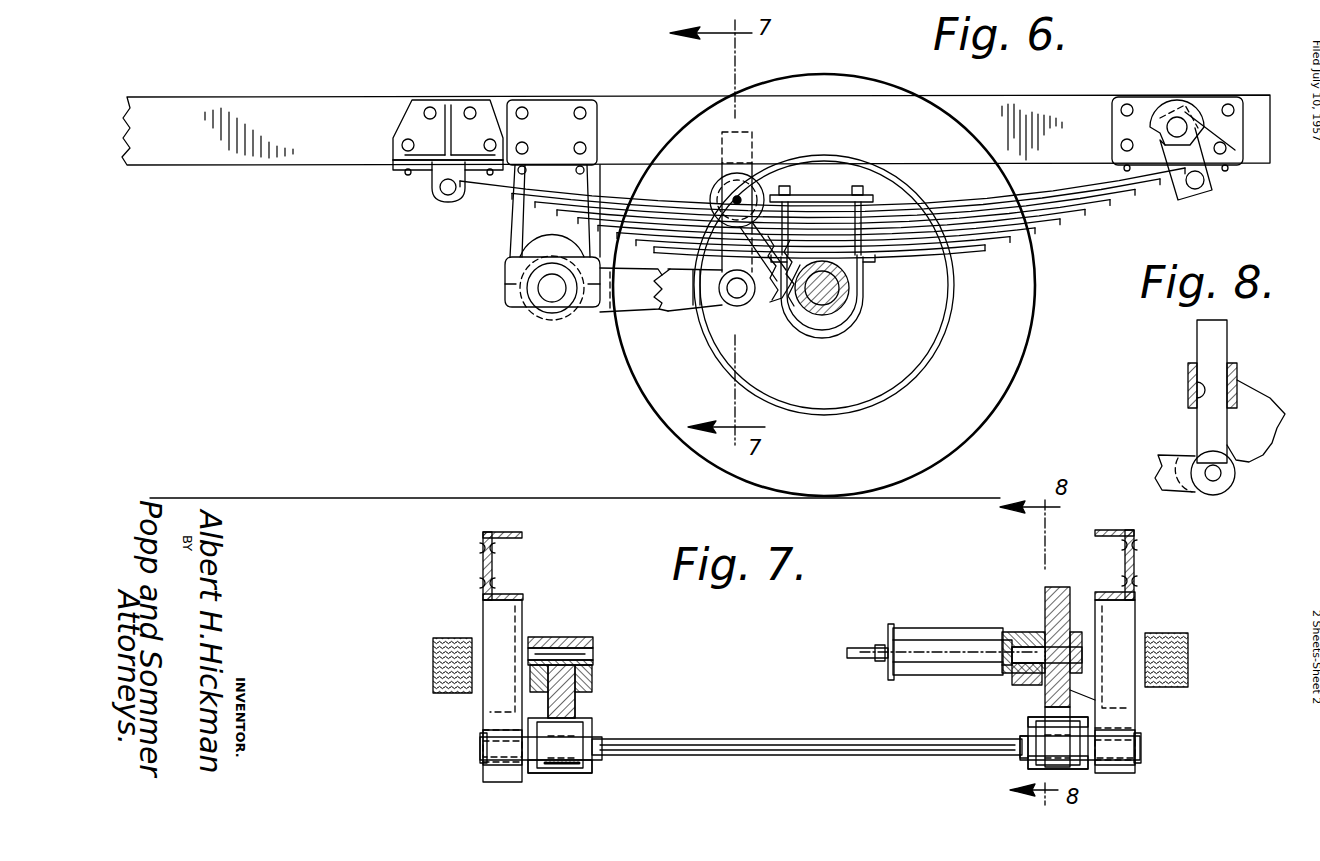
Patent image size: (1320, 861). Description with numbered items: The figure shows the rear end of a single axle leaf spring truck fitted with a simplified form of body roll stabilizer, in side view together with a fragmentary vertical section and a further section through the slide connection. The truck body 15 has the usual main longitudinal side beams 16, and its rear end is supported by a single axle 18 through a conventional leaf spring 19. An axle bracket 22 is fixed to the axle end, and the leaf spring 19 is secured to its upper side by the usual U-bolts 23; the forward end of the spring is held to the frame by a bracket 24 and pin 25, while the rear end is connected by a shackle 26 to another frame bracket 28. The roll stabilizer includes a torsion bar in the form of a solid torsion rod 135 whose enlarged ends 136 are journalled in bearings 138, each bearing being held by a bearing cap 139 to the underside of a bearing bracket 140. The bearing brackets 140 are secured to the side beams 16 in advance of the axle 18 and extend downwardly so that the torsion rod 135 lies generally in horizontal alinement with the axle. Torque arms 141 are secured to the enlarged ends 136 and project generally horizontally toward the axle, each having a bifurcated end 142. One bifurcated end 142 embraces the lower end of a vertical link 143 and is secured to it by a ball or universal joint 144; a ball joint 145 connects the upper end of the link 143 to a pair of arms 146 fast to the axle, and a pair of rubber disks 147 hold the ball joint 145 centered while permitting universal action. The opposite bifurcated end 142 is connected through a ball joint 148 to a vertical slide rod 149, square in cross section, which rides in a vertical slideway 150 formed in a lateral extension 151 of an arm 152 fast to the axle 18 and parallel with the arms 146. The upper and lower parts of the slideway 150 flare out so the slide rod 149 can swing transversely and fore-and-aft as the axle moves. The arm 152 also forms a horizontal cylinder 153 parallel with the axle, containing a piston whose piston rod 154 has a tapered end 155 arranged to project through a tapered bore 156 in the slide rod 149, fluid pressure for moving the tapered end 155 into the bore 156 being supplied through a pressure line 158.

In FIG. 6, the truck body 15 is at (1057, 100).
In FIG. 6, the main longitudinal side beams 16 is at (953, 110).
In FIG. 7, the main longitudinal side beams 16 is at (512, 535).
In FIG. 6, the axle 18 is at (850, 290).
In FIG. 6, the leaf spring 19 is at (1068, 204).
In FIG. 7, the leaf spring 19 is at (430, 650).
In FIG. 6, the axle bracket 22 is at (860, 264).
In FIG. 6, the U-bolts 23 is at (830, 182).
In FIG. 6, the bracket 24 is at (410, 120).
In FIG. 6, the pin 25 is at (445, 198).
In FIG. 6, the shackle 26 is at (1208, 200).
In FIG. 6, the frame bracket 28 is at (1142, 108).
In FIG. 7, the torsion rod 135 is at (775, 741).
In FIG. 6, the enlarged ends 136 is at (540, 304).
In FIG. 7, the enlarged ends 136 is at (482, 748).
In FIG. 6, the bearings 138 is at (550, 302).
In FIG. 7, the bearings 138 is at (485, 774).
In FIG. 6, the bearing cap 139 is at (560, 315).
In FIG. 7, the bearing cap 139 is at (508, 782).
In FIG. 6, the bearing bracket 140 is at (520, 233).
In FIG. 7, the bearing bracket 140 is at (495, 611).
In FIG. 6, the torque arms 141 is at (665, 306).
In FIG. 7, the torque arms 141 is at (590, 726).
In FIG. 6, the bifurcated end 142 is at (730, 308).
In FIG. 8, the bifurcated end 142 is at (1185, 482).
In FIG. 7, the bifurcated end 142 is at (555, 777).
In FIG. 7, the vertical link 143 is at (560, 707).
In FIG. 7, the ball or universal joint 144 is at (575, 780).
In FIG. 7, the ball joint 145 is at (563, 638).
In FIG. 6, the arms 146 is at (800, 302).
In FIG. 7, the arms 146 is at (580, 691).
In FIG. 7, the rubber disks 147 is at (580, 637).
In FIG. 6, the ball joint 148 is at (742, 304).
In FIG. 8, the ball joint 148 is at (1190, 464).
In FIG. 7, the ball joint 148 is at (1020, 764).
In FIG. 6, the vertical slide rod 149 is at (722, 147).
In FIG. 8, the vertical slide rod 149 is at (1203, 332).
In FIG. 7, the vertical slide rod 149 is at (1050, 714).
In FIG. 8, the vertical slideway 150 is at (1205, 394).
In FIG. 7, the vertical slideway 150 is at (1045, 614).
In FIG. 8, the lateral extension 151 is at (1188, 374).
In FIG. 7, the lateral extension 151 is at (1073, 632).
In FIG. 6, the arm 152 is at (770, 307).
In FIG. 8, the arm 152 is at (1263, 402).
In FIG. 7, the arm 152 is at (1025, 692).
In FIG. 6, the horizontal cylinder 153 is at (722, 190).
In FIG. 7, the horizontal cylinder 153 is at (920, 634).
In FIG. 7, the piston rod 154 is at (1005, 647).
In FIG. 7, the tapered end 155 is at (1030, 647).
In FIG. 7, the tapered bore 156 is at (1095, 702).
In FIG. 6, the pressure line 158 is at (733, 200).
In FIG. 7, the pressure line 158 is at (858, 647).